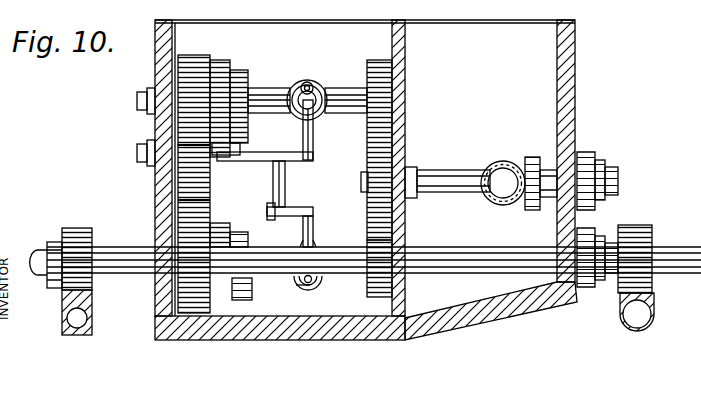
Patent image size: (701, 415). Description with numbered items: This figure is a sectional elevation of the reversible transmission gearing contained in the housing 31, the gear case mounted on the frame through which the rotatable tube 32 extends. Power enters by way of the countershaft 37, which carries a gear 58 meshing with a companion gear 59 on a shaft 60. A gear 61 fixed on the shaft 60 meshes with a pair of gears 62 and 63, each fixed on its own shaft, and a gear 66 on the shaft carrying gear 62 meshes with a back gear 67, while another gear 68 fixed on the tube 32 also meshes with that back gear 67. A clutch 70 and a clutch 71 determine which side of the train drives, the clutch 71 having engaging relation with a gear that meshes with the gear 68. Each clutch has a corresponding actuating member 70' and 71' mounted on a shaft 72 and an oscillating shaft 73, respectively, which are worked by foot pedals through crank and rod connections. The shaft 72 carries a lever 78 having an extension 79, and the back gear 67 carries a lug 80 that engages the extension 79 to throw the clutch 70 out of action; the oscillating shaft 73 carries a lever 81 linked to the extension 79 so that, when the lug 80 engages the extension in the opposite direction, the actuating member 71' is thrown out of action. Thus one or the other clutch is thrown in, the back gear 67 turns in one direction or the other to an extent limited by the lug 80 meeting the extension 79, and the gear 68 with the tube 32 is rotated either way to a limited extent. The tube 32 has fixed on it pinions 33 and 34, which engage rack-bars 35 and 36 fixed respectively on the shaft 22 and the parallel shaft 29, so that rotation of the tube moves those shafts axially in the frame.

The housing 31 is at (578, 84).
The rotatable tube 32 is at (458, 250).
The gear 66 is at (190, 56).
The gear 68 is at (186, 232).
The back gear 67 is at (206, 178).
The clutch 70 is at (260, 88).
The actuating member 70' is at (327, 76).
The shaft 72 is at (315, 87).
The lever 78 is at (313, 140).
The lug 80 is at (244, 148).
The extension 79 is at (256, 161).
The lever 81 is at (313, 214).
The gear 62 is at (369, 60).
The gear 61 is at (363, 165).
The gear 63 is at (367, 298).
The clutch 71 is at (259, 294).
The actuating member 71' is at (326, 324).
The oscillating shaft 73 is at (300, 282).
The pinion 34 is at (78, 228).
The rack-bar 36 is at (92, 305).
The shaft 29 is at (83, 326).
The shaft 60 is at (446, 176).
The countershaft 37 is at (496, 176).
The gear 58 is at (512, 160).
The companion gear 59 is at (534, 210).
The pinion 33 is at (640, 226).
The rack-bar 35 is at (654, 302).
The shaft 22 is at (644, 326).